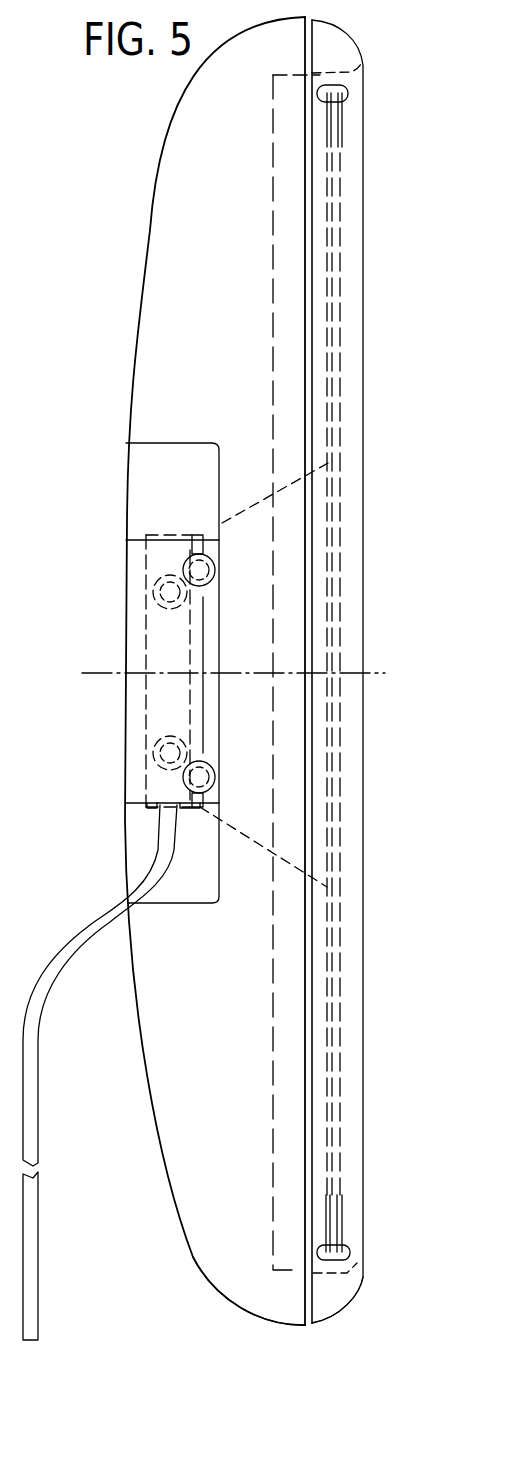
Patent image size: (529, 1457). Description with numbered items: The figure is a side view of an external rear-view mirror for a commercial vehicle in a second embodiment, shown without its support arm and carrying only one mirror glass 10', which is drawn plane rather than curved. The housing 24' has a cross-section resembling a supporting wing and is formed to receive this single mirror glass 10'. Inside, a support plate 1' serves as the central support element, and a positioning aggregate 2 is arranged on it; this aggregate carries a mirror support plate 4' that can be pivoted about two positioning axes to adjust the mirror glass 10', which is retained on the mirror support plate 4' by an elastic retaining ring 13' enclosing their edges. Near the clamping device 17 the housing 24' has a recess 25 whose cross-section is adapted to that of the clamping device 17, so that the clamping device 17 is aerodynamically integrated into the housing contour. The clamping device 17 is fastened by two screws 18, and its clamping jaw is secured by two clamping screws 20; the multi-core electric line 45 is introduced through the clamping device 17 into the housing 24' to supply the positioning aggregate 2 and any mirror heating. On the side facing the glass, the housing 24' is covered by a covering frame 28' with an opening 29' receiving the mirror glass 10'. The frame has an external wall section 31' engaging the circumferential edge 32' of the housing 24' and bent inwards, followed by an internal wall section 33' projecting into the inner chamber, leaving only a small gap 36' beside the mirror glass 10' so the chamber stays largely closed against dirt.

The support plate 1' is at (172, 634).
The positioning aggregate 2 is at (252, 523).
The mirror support plate 4' is at (280, 640).
The mirror glass 10' is at (387, 695).
The elastic retaining ring 13' is at (376, 1227).
The clamping device 17 is at (144, 645).
The screws 18 is at (153, 590).
The clamping screws 20 is at (210, 570).
The housing 24' is at (192, 671).
The recess 25 is at (188, 885).
The covering frame 28' is at (373, 685).
The opening 29' is at (354, 672).
The external wall section 31' is at (374, 1300).
The circumferential edge 32' is at (244, 1303).
The internal wall section 33' is at (374, 1262).
The gap 36' is at (353, 80).
The multi-core electric line 45 is at (30, 1120).